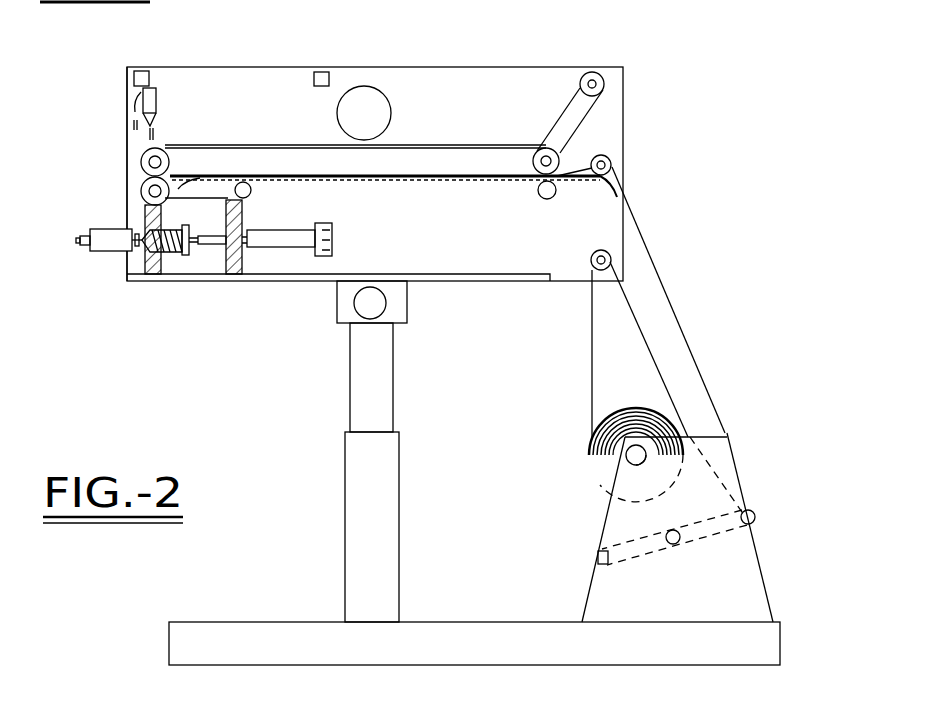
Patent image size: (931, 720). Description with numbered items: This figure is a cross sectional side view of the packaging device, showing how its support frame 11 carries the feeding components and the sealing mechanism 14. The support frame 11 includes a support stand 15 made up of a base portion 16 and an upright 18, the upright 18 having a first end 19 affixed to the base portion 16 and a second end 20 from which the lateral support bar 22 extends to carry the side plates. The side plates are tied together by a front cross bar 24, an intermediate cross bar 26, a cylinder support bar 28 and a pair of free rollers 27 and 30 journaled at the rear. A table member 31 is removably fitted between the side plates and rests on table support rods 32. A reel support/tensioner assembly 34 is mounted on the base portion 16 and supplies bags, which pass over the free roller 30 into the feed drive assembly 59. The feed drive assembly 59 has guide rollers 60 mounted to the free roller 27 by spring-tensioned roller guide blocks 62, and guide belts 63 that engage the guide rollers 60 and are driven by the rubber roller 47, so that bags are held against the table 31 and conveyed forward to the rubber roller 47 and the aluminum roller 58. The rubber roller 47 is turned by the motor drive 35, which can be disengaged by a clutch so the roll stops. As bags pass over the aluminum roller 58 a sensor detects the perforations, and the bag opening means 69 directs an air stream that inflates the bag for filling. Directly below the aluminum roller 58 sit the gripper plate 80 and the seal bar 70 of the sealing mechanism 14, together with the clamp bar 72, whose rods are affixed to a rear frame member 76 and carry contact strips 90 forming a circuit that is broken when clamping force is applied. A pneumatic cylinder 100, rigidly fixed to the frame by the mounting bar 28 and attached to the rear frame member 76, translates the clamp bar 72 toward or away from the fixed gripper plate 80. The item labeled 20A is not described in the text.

The support frame 11 is at (308, 373).
The sealing mechanism 14 is at (160, 293).
The support stand 15 is at (395, 495).
The base portion 16 is at (258, 622).
The upright 18 is at (390, 412).
The first end 19 is at (390, 614).
The second end 20 is at (393, 325).
The housing top 20A is at (510, 67).
The lateral support bar 22 is at (386, 303).
The front cross bar 24 is at (142, 71).
The intermediate cross bar 26 is at (325, 45).
The free roller 27 is at (604, 84).
The cylinder support bar 28 is at (222, 270).
The free roller 30 is at (612, 160).
The table member 31 is at (458, 181).
The table support rods 32 is at (555, 197).
The reel support/tensioner assembly 34 is at (725, 426).
The motor drive 35 is at (369, 87).
The rubber roller 47 is at (141, 158).
The aluminum roller 58 is at (142, 188).
The feed drive assembly 59 is at (597, 134).
The guide rollers 60 is at (546, 148).
The roller guide blocks 62 is at (591, 72).
The guide belts 63 is at (475, 145).
The bag opening means 69 is at (158, 98).
The seal bar 70 is at (175, 252).
The clamp bar 72 is at (105, 255).
The rear frame member 76 is at (333, 236).
The gripper plate 80 is at (125, 213).
The contact strips 90 is at (90, 240).
The pneumatic cylinder 100 is at (298, 248).